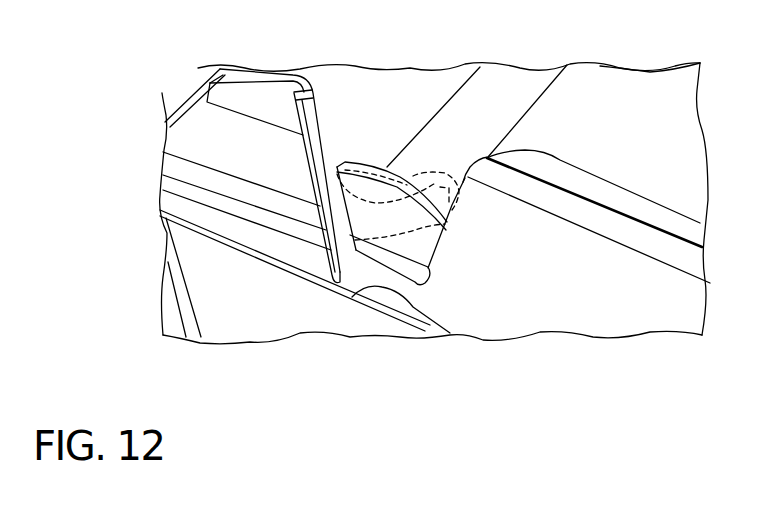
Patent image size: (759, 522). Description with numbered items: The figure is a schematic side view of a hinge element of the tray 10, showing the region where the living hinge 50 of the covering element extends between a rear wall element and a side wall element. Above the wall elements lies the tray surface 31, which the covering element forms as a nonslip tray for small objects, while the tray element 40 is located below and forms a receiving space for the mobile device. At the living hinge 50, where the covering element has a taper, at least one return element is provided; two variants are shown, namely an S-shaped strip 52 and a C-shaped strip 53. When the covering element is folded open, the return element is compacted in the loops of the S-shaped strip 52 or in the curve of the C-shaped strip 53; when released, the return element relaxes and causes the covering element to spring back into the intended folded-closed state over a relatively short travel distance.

The tray 10 is at (135, 204).
The tray surface 31 is at (677, 92).
The tray element 40 is at (168, 343).
The living hinge 50 is at (532, 73).
The return element (S-shaped strip) 52 is at (370, 190).
The return element (C-shaped strip) 53 is at (375, 172).